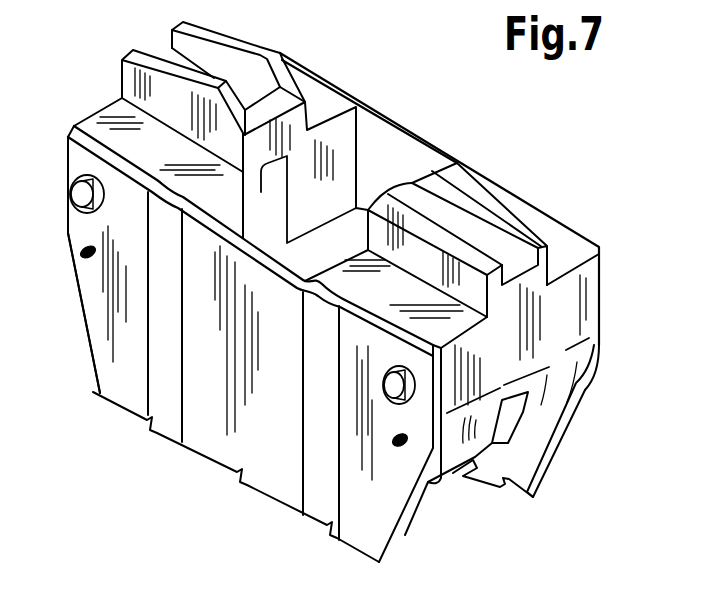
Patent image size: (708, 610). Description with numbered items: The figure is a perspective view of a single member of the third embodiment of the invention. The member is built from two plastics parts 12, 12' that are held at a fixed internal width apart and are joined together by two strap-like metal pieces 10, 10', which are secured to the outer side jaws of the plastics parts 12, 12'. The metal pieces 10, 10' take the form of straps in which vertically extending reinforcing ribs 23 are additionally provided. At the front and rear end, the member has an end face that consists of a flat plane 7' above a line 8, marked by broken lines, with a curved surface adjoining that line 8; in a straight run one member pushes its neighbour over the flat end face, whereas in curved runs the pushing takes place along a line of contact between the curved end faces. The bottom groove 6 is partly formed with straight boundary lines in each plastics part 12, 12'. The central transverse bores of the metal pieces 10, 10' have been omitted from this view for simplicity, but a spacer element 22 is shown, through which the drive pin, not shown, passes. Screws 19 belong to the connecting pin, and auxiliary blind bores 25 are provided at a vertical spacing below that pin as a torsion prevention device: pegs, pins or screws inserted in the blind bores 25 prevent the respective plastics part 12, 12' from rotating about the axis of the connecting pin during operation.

The bottom groove 6 is at (273, 192).
The flat plane 7' is at (546, 328).
The line 8 is at (557, 358).
The strap-like metal piece 10 is at (265, 330).
The strap-like metal piece 10' is at (439, 198).
The plastics part 12 is at (464, 240).
The plastics part 12' is at (239, 113).
The screw 19 is at (72, 204).
The spacer element 22 is at (366, 210).
The reinforcing rib 23 is at (162, 381).
The auxiliary blind bore 25 is at (404, 455).